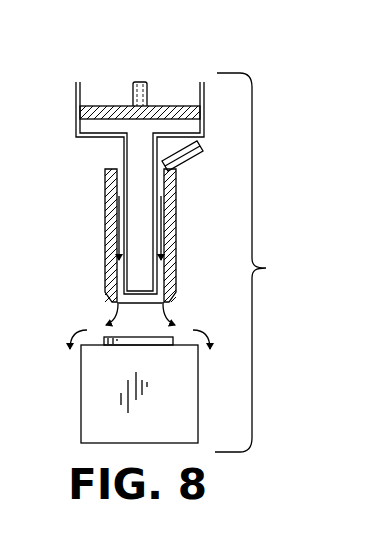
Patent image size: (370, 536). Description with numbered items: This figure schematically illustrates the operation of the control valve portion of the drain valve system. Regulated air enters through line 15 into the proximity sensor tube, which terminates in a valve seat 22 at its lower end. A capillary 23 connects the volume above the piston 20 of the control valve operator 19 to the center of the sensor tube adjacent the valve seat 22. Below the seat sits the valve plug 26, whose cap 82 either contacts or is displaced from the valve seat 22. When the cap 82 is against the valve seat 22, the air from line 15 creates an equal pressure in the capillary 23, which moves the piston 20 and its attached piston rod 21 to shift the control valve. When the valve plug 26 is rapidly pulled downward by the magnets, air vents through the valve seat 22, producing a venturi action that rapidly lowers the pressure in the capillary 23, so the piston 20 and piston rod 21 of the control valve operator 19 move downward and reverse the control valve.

The control valve operator 19 is at (204, 122).
The piston 20 is at (94, 105).
The piston rod 21 is at (147, 92).
The line 15 is at (200, 160).
The capillary 23 is at (106, 198).
The valve seat 22 is at (176, 299).
The cap 82 is at (130, 337).
The valve plug 26 is at (81, 402).